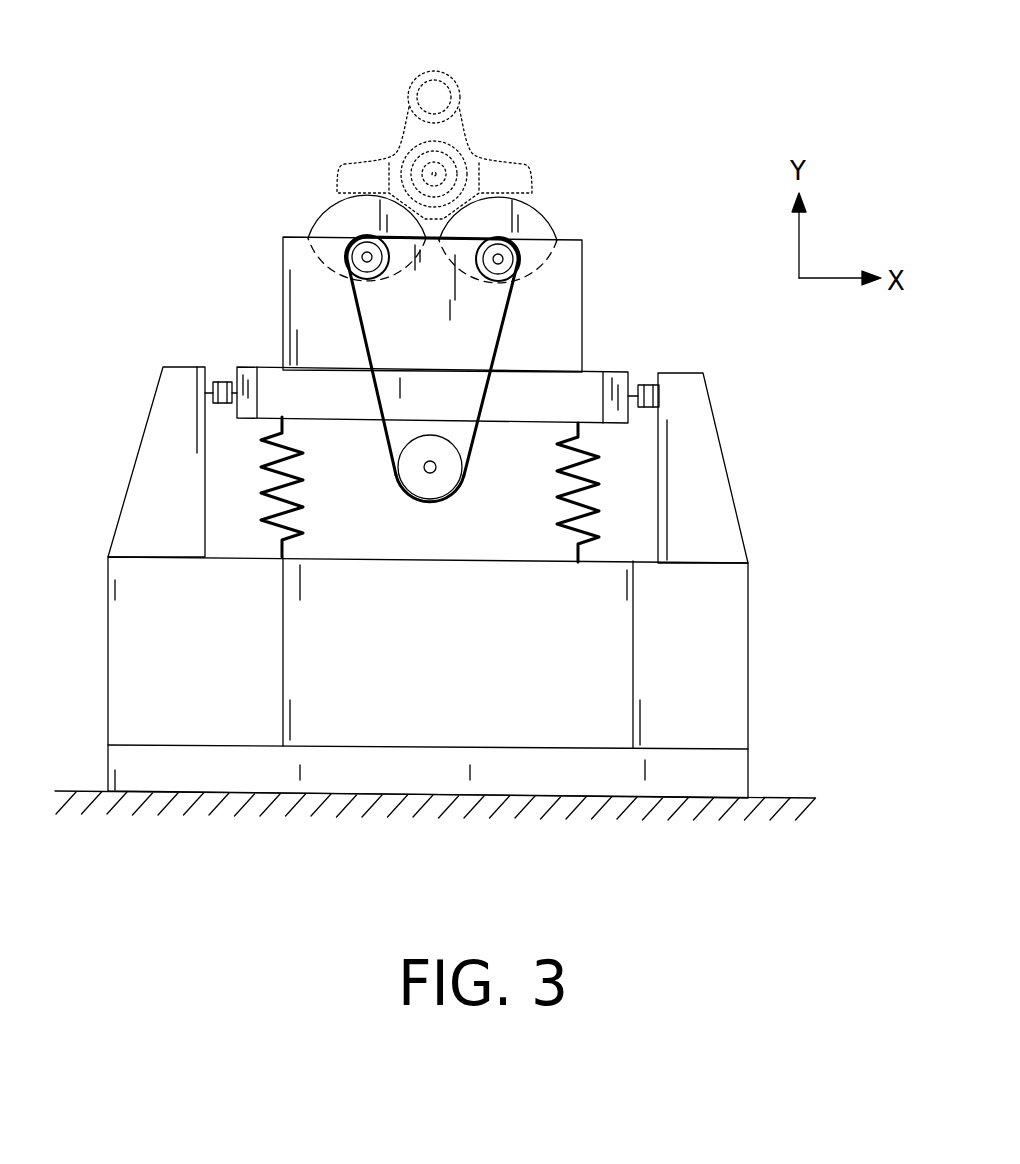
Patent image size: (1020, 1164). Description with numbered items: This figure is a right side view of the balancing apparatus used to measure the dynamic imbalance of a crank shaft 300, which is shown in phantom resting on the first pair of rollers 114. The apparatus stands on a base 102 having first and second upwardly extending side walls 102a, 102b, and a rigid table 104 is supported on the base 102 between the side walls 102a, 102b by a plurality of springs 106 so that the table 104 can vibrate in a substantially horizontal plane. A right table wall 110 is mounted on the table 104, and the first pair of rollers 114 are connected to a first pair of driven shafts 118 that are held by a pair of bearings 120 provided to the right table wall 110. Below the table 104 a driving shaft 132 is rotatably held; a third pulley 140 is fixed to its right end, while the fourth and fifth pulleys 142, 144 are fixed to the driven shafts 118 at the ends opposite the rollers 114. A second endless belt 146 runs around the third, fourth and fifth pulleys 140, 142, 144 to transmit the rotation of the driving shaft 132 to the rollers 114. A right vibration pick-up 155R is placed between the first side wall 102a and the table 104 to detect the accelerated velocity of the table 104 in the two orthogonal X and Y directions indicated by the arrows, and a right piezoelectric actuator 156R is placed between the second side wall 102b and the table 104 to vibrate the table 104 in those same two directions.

The crank shaft 300 is at (475, 60).
The first pair of rollers 114 is at (370, 193).
The pair of bearings 120 is at (313, 232).
The right table wall 110 is at (570, 302).
The first pair of driven shafts 118 is at (380, 280).
The fifth pulley 144 is at (358, 280).
The fourth pulley 142 is at (483, 281).
The second endless belt 146 is at (385, 443).
The table 104 is at (616, 372).
The right vibration pick-up 155R is at (219, 380).
The right piezoelectric actuator 156R is at (650, 385).
The first side wall 102a is at (148, 478).
The second side wall 102b is at (710, 487).
The springs 106 is at (273, 510).
The driving shaft 132 is at (462, 473).
The third pulley 140 is at (418, 485).
The base 102 is at (727, 690).